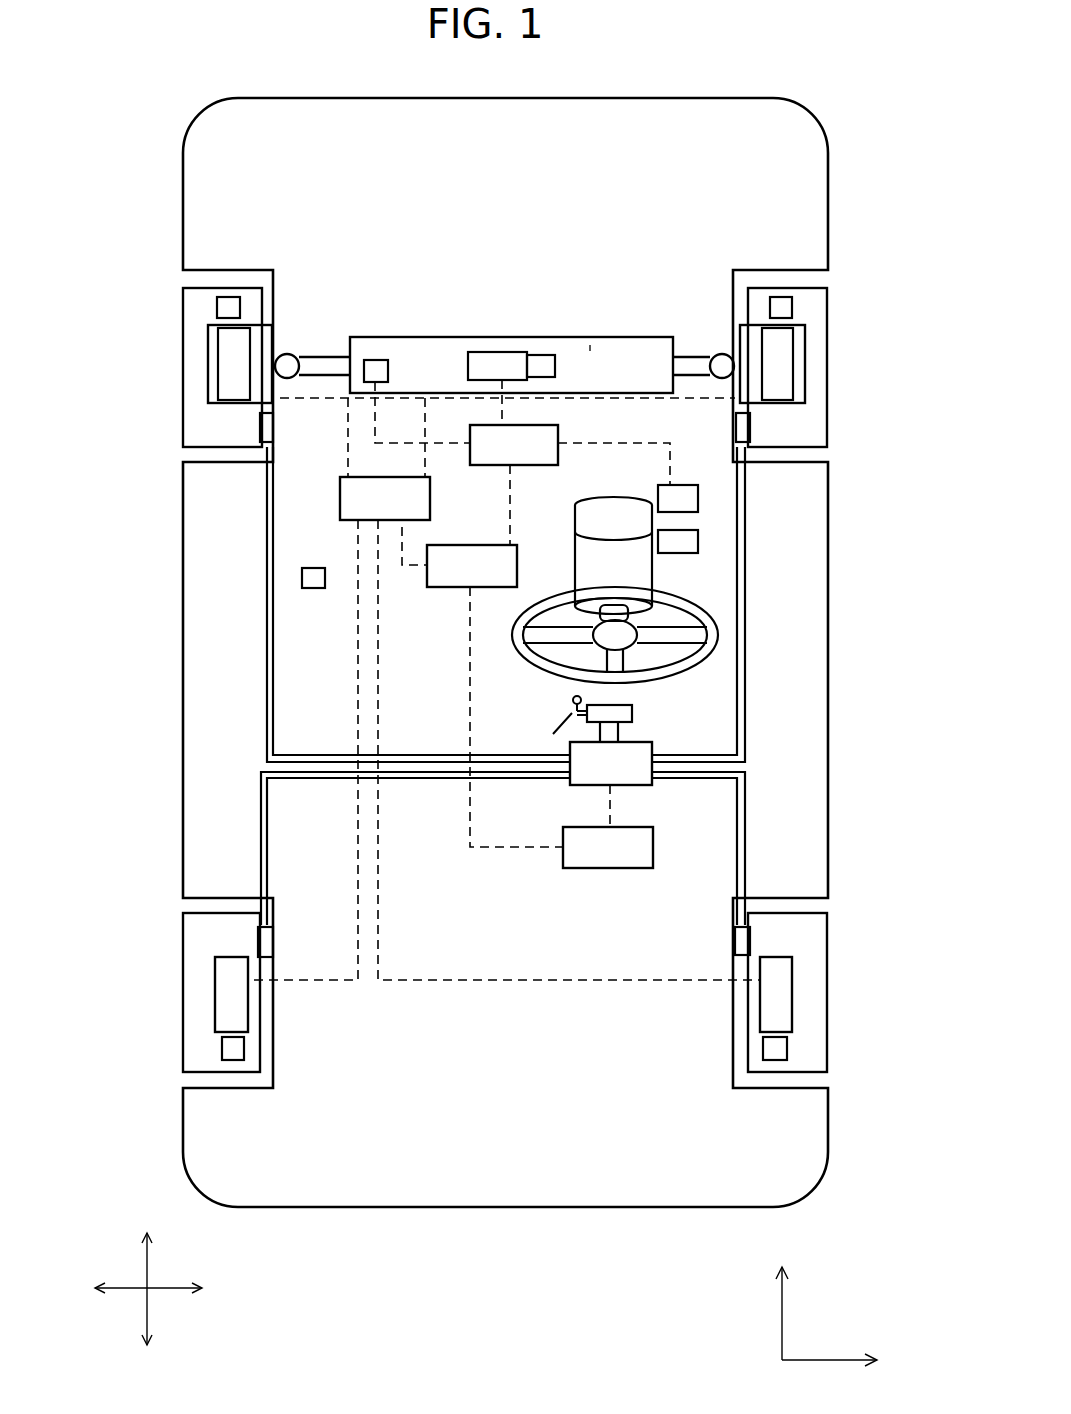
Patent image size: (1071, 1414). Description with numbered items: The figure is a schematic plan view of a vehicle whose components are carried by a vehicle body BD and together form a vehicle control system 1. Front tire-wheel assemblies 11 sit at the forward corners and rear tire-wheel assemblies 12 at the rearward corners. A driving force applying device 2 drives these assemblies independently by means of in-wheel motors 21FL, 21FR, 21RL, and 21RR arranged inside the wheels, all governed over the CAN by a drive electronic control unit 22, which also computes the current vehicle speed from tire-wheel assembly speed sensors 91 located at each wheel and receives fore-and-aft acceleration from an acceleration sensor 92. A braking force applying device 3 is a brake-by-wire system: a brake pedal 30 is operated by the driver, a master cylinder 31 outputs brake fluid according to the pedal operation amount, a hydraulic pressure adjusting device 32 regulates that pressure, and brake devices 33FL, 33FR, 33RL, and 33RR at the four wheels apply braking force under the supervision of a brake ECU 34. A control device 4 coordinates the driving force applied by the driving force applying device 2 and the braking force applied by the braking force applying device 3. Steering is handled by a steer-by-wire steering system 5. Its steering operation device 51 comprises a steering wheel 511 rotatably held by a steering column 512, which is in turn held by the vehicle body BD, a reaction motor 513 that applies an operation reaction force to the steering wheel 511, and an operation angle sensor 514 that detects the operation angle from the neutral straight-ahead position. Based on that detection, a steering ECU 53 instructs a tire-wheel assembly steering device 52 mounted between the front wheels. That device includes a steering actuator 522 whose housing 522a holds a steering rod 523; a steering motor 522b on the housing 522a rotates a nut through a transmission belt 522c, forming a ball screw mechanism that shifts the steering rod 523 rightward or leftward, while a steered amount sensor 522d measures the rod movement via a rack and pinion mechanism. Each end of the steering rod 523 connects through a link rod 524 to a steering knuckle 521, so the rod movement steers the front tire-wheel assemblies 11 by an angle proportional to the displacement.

The vehicle control system 1 is at (142, 76).
The vehicle body BD is at (390, 98).
The driving force applying device 2 is at (296, 488).
The braking force applying device 3 is at (630, 788).
The control device 4 is at (445, 575).
The steering system 5 is at (720, 607).
The front tire-wheel assemblies 11 is at (180, 363).
The rear tire-wheel assemblies 12 is at (185, 915).
The in-wheel motor 21FL is at (233, 367).
The in-wheel motor 21FR is at (783, 370).
The in-wheel motor 21RL is at (225, 992).
The in-wheel motor 21RR is at (780, 1000).
The drive electronic control unit 22 is at (350, 489).
The brake pedal 30 is at (555, 728).
The master cylinder 31 is at (632, 712).
The hydraulic pressure adjusting device 32 is at (585, 788).
The brake device 33FL is at (268, 427).
The brake device 33FR is at (745, 425).
The brake device 33RL is at (263, 942).
The brake device 33RR is at (742, 940).
The brake ECU 34 is at (613, 870).
The steering operation device 51 is at (670, 675).
The tire-wheel assembly steering device 52 is at (408, 250).
The steering ECU 53 is at (496, 432).
The tire-wheel assembly speed sensors 91 is at (223, 308).
The acceleration sensor 92 is at (307, 585).
The steering wheel 511 is at (705, 648).
The steering column 512 is at (640, 568).
The reaction motor 513 is at (685, 545).
The operation angle sensor 514 is at (690, 500).
The steering knuckles 521 is at (205, 345).
The steering actuator 522 is at (595, 385).
The housing 522a is at (590, 345).
The steering motor 522b is at (493, 358).
The transmission belt 522c is at (540, 360).
The steered amount sensor 522d is at (376, 362).
The steering rod 523 is at (310, 357).
The link rod 524 is at (289, 355).